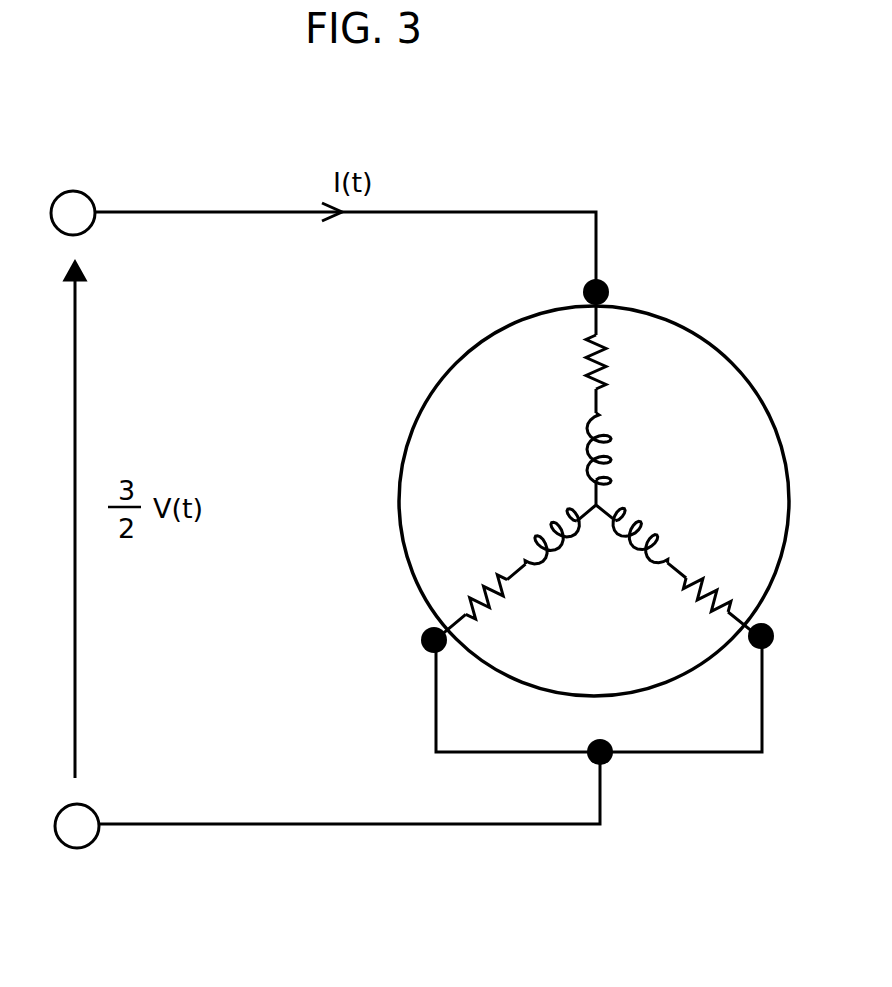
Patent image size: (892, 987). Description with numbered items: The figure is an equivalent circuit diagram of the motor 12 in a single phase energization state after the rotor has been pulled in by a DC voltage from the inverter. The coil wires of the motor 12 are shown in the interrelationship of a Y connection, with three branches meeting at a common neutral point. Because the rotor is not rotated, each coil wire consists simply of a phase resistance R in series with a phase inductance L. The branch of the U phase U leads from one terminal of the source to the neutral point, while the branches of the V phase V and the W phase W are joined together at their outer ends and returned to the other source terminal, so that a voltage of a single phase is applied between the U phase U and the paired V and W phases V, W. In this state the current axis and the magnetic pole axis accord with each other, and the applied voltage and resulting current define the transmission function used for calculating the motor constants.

The motor 12 is at (606, 481).
The phase resistance R is at (599, 477).
The phase inductance L is at (599, 488).
The U phase U is at (609, 285).
The V phase V is at (417, 638).
The W phase W is at (781, 638).